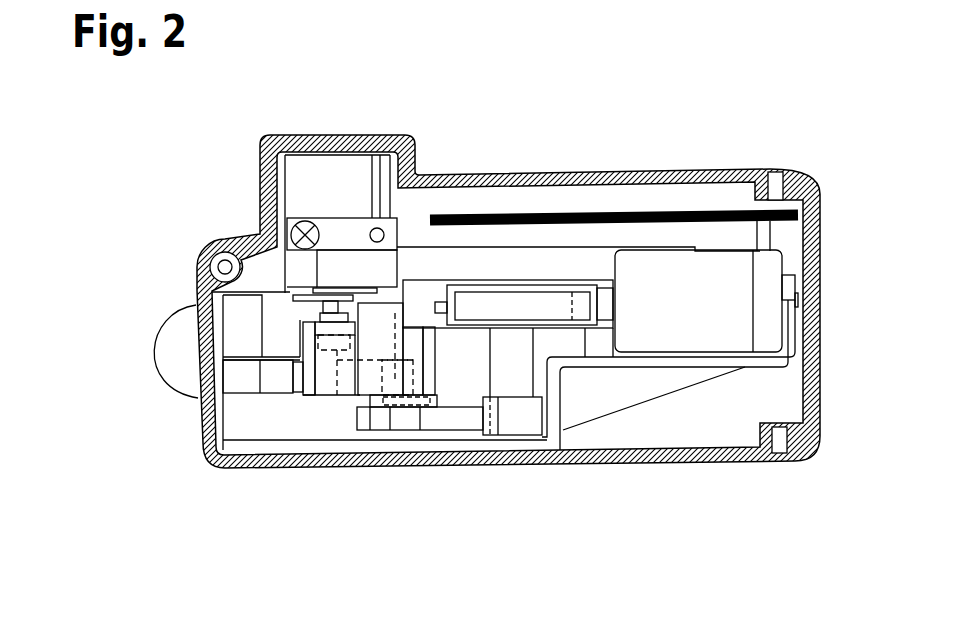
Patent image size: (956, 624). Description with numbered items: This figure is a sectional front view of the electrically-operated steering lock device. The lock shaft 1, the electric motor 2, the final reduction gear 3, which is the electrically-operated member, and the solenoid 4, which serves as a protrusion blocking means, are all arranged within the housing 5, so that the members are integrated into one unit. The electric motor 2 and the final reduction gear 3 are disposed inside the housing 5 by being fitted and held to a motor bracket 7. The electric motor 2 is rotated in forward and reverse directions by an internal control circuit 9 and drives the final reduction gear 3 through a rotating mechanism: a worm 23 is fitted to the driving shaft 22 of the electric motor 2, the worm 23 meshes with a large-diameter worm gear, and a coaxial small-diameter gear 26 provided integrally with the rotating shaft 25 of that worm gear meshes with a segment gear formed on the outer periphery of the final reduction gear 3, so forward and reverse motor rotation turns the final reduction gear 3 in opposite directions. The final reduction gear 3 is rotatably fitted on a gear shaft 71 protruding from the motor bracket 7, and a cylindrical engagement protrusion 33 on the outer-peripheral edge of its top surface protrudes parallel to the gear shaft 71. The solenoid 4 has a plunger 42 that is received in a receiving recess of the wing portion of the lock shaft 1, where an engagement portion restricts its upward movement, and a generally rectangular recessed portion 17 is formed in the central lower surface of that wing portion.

The lock shaft 1 is at (395, 317).
The electric motor 2 is at (698, 323).
The final reduction gear 3 is at (377, 420).
The solenoid 4 is at (347, 263).
The housing 5 is at (600, 463).
The motor bracket 7 is at (638, 362).
The internal control circuit 9 is at (660, 213).
The recessed portion 17 is at (348, 358).
The driving shaft 22 is at (600, 283).
The worm 23 is at (563, 283).
The rotating shaft 25 is at (528, 363).
The small-diameter gear 26 is at (518, 423).
The engagement protrusion 33 is at (392, 382).
The plunger 42 is at (320, 316).
The gear shaft 71 is at (408, 440).